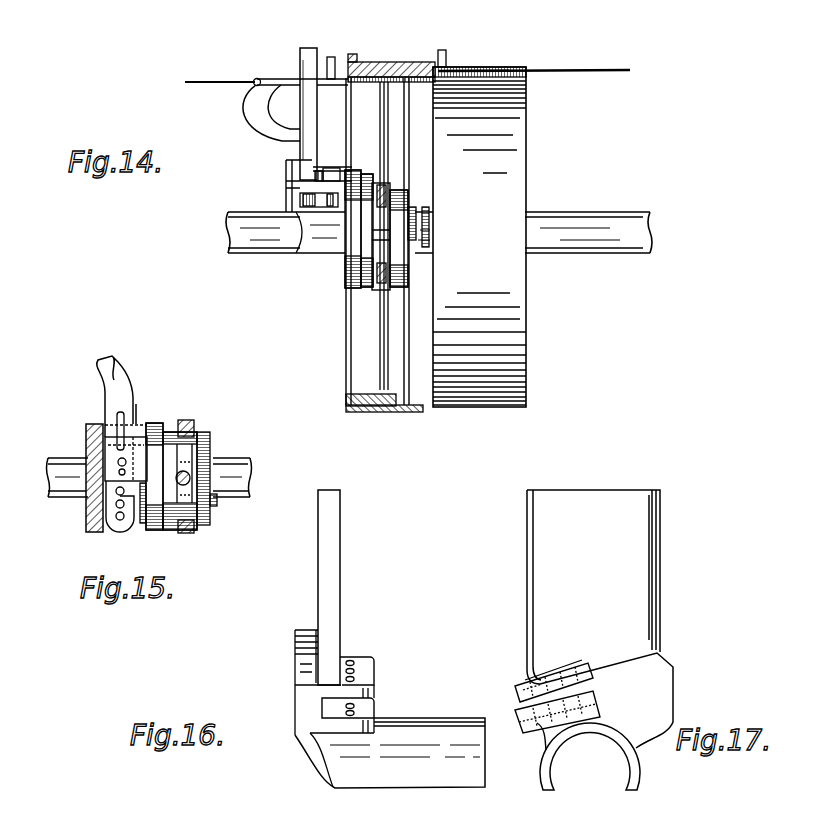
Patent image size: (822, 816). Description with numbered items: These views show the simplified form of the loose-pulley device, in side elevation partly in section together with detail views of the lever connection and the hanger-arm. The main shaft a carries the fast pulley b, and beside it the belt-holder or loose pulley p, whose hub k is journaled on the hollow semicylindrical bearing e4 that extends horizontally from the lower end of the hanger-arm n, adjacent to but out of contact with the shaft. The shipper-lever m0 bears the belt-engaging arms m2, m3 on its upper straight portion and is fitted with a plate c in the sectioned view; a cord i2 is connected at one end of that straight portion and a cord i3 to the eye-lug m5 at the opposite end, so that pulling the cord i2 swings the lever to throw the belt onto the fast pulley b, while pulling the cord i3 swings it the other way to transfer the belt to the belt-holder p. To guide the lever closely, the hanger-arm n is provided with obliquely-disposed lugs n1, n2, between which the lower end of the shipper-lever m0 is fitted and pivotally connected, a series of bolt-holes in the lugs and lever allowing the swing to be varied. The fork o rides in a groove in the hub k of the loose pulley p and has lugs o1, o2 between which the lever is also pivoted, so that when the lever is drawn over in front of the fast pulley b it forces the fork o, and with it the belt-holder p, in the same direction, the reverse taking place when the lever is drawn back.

In FIG. 14, the shaft a is at (616, 214).
In FIG. 15, the shaft a is at (240, 462).
In FIG. 14, the pulley b is at (508, 186).
In FIG. 14, the plate c is at (405, 60).
In FIG. 15, the hub k is at (212, 432).
In FIG. 14, the belt-holder or loose pulley p is at (352, 340).
In FIG. 14, the hanger-arm n is at (305, 98).
In FIG. 15, the hanger-arm n is at (92, 515).
In FIG. 16, the hanger-arm n is at (336, 586).
In FIG. 17, the hanger-arm n is at (640, 566).
In FIG. 14, the lug n1 is at (318, 178).
In FIG. 16, the lug n1 is at (368, 673).
In FIG. 17, the lug n1 is at (516, 688).
In FIG. 14, the lug n2 is at (302, 200).
In FIG. 15, the lug n2 is at (106, 530).
In FIG. 16, the lug n2 is at (374, 712).
In FIG. 17, the lug n2 is at (520, 716).
In FIG. 14, the fork o is at (362, 185).
In FIG. 15, the fork o is at (165, 440).
In FIG. 14, the lug o1 is at (333, 166).
In FIG. 15, the lug o1 is at (110, 452).
In FIG. 14, the lug o2 is at (372, 192).
In FIG. 15, the lug o2 is at (148, 428).
In FIG. 14, the shipper-lever m0 is at (278, 126).
In FIG. 15, the shipper-lever m0 is at (103, 376).
In FIG. 14, the belt-engaging arm m2 is at (334, 60).
In FIG. 14, the belt-engaging arm m3 is at (446, 53).
In FIG. 14, the eye-lug m5 is at (258, 77).
In FIG. 14, the cord i2 is at (570, 68).
In FIG. 14, the cord i3 is at (207, 78).
In FIG. 14, the hollow semicylindrical bearing e4 is at (417, 222).
In FIG. 15, the hollow semicylindrical bearing e4 is at (214, 506).
In FIG. 16, the hollow semicylindrical bearing e4 is at (470, 762).
In FIG. 17, the hollow semicylindrical bearing e4 is at (618, 736).